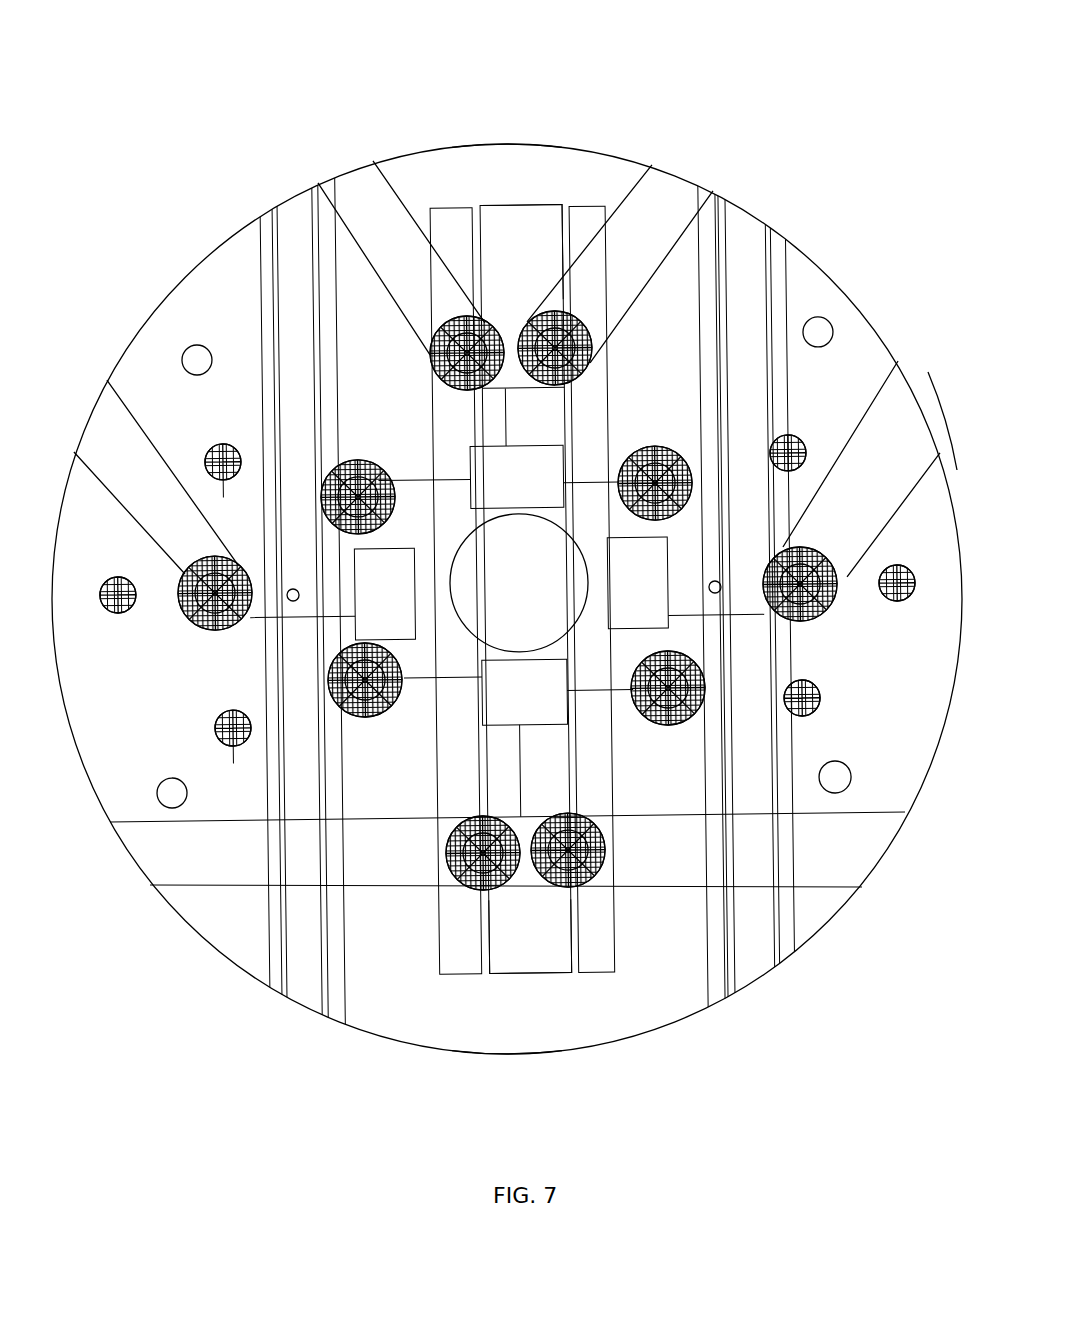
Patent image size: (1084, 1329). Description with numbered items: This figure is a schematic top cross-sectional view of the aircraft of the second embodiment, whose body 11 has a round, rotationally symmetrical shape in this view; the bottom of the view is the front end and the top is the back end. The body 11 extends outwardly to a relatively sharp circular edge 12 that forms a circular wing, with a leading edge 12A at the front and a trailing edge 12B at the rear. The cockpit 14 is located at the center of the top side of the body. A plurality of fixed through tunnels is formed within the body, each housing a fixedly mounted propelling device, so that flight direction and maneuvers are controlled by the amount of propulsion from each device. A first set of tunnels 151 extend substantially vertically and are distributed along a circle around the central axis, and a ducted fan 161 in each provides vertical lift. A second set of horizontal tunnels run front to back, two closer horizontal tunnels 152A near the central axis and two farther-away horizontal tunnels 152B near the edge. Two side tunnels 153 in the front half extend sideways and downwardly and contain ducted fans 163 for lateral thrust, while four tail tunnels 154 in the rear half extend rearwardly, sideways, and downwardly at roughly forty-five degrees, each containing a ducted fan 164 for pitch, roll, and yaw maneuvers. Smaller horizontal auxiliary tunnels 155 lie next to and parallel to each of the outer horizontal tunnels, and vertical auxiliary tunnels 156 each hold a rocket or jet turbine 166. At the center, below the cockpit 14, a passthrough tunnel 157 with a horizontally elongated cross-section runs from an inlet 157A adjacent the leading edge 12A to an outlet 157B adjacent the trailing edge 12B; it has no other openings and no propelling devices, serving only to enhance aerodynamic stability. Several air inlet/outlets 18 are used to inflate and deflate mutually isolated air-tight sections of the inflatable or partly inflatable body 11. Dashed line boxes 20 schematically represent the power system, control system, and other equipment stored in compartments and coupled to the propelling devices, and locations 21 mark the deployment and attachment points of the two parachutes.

The body 11 is at (173, 313).
The circular edge 12 is at (848, 302).
The leading edge 12A is at (503, 1054).
The trailing edge 12B is at (497, 143).
The cockpit 14 is at (473, 600).
The air inlet/outlets 18 is at (210, 343).
The dashed line boxes 20 is at (511, 602).
The parachute locations 21 is at (297, 590).
The first set of tunnels 151 is at (362, 460).
The closer horizontal tunnels 152A is at (458, 230).
The farther-away horizontal tunnels 152B is at (293, 212).
The side tunnels 153 is at (158, 848).
The tail tunnels 154 is at (360, 170).
The horizontal auxiliary tunnels 155 is at (333, 190).
The vertical auxiliary tunnels 156 is at (224, 444).
The passthrough tunnel 157 is at (513, 220).
The inlet 157A is at (553, 975).
The outlet 157B is at (553, 207).
The ducted fan 161 is at (390, 517).
The ducted fan 163 is at (457, 878).
The ducted fan 164 is at (430, 355).
The rocket or jet turbine 166 is at (228, 484).